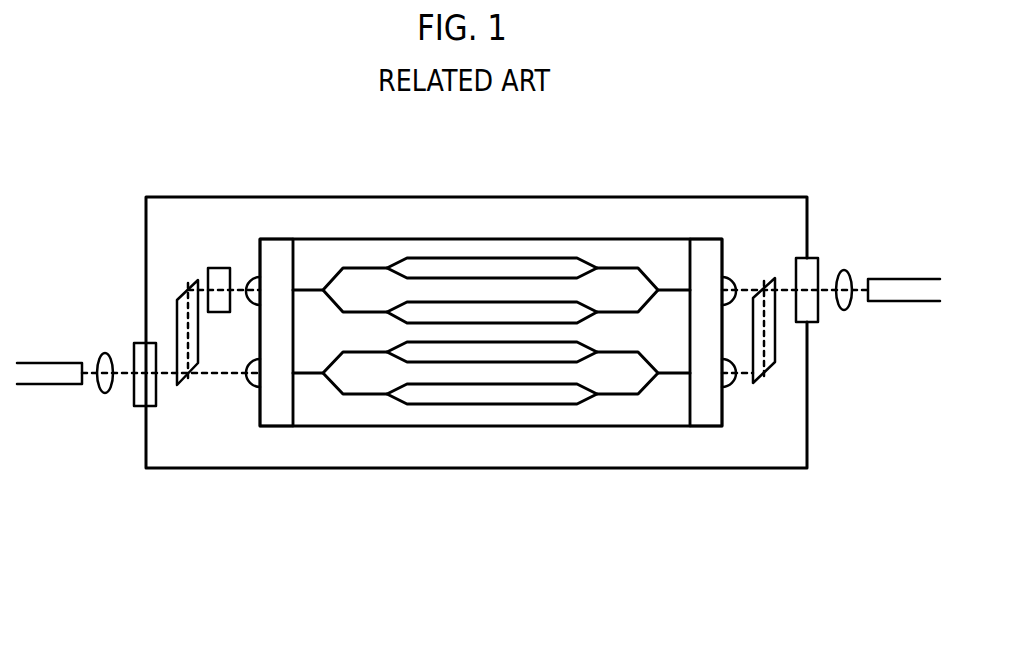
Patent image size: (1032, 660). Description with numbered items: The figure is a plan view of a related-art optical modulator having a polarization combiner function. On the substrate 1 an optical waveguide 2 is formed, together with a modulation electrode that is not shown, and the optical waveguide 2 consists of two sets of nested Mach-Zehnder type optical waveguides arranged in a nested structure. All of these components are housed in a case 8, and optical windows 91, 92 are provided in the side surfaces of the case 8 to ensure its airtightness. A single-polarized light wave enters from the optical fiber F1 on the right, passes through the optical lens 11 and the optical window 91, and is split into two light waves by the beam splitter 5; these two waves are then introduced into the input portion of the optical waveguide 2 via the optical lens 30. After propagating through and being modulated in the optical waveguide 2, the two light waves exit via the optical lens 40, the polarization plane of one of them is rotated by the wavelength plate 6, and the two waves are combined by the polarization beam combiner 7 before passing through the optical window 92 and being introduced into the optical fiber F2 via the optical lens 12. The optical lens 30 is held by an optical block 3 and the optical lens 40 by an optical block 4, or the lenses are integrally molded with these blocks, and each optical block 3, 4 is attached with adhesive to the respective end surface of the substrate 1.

The substrate 1 is at (529, 427).
The optical waveguide 2 is at (600, 404).
The optical block 3 is at (709, 237).
The optical block 4 is at (276, 237).
The beam splitter 5 is at (773, 278).
The wavelength plate 6 is at (216, 268).
The polarization beam combiner 7 is at (183, 298).
The case 8 is at (807, 425).
The optical lens 11 is at (844, 270).
The optical lens 12 is at (106, 394).
The optical lens 30 is at (740, 277).
The optical lens 40 is at (250, 277).
The optical window 91 is at (810, 323).
The optical window 92 is at (137, 343).
The optical fiber F1 is at (906, 279).
The optical fiber F2 is at (47, 384).